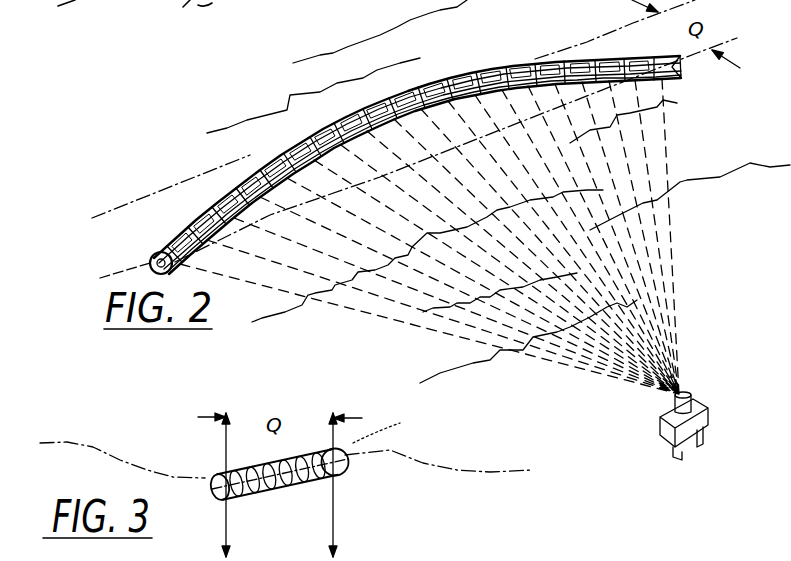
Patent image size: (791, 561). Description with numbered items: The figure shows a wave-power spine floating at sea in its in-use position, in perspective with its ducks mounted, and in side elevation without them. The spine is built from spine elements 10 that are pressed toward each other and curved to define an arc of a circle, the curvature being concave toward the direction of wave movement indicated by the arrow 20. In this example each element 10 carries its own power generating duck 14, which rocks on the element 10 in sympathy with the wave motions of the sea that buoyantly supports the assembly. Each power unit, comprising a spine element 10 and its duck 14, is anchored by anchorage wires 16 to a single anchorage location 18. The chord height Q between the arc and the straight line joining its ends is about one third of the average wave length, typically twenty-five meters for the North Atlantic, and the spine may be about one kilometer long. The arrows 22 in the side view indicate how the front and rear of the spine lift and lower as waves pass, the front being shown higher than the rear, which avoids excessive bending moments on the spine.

In FIG. 2, the spine element 10 is at (156, 256).
In FIG. 2, the power generating duck 14 is at (197, 232).
In FIG. 2, the anchorage wire 16 is at (655, 203).
In FIG. 2, the anchorage location 18 is at (692, 402).
In FIG. 2, the arrow indicating direction of wave movement 20 is at (688, 198).
In FIG. 3, the arrows indicating lift and lower of spine 22 is at (200, 464).